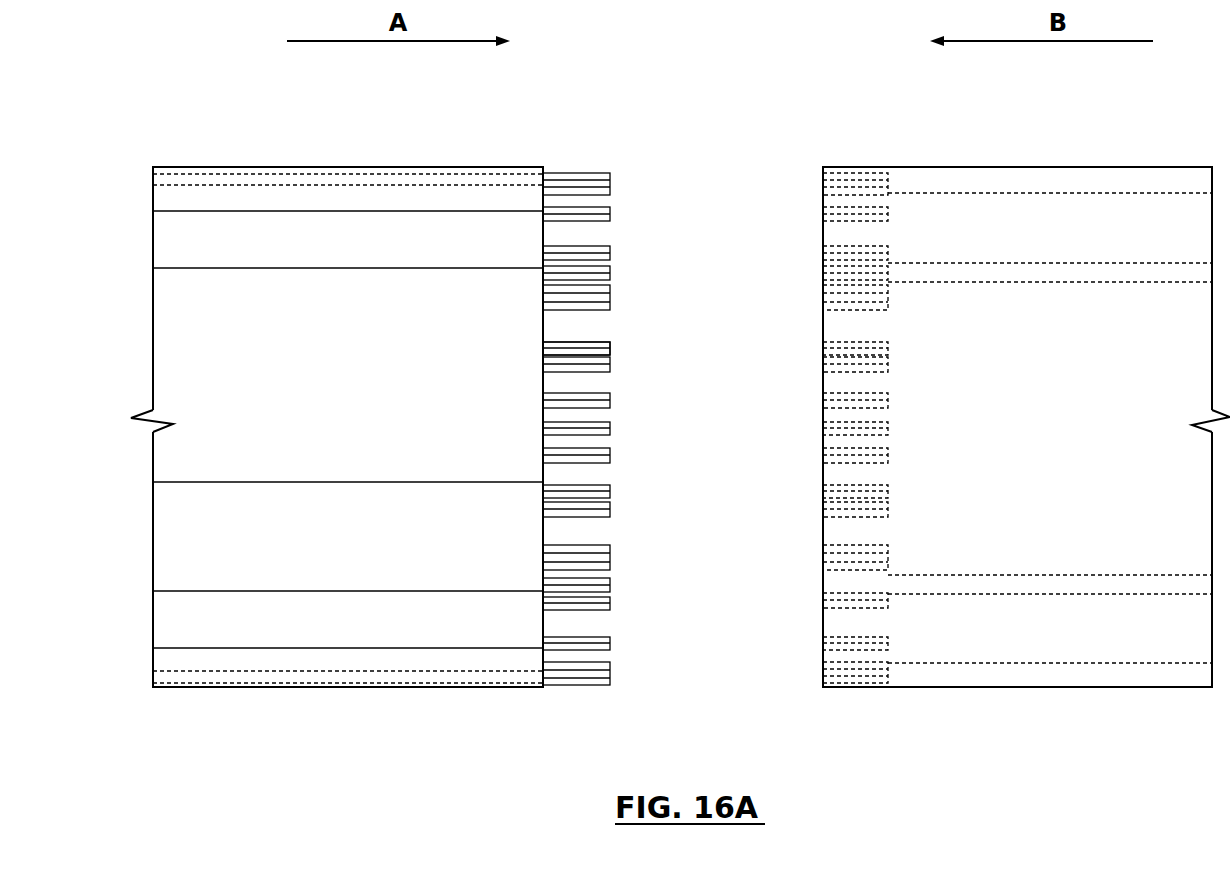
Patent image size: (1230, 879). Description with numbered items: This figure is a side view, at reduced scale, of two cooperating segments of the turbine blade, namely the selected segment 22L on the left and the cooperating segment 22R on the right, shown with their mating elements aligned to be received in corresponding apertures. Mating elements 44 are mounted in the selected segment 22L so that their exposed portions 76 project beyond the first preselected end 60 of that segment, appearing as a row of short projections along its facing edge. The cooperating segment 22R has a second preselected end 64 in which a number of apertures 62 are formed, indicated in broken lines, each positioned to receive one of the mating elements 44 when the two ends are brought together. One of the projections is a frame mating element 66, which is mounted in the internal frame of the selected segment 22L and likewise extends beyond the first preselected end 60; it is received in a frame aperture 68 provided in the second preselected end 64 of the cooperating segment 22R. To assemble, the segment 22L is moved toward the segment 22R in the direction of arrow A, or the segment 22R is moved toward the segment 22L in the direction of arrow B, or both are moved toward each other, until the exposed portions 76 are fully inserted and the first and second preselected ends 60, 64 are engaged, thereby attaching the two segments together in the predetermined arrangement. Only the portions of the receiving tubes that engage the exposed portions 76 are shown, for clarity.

The selected one of the segments 22L is at (360, 154).
The cooperating one of the segments 22R is at (1020, 154).
The mating element 44 is at (607, 183).
The exposed portions 76 is at (585, 218).
The frame mating element 66 is at (605, 350).
The first preselected end 60 is at (552, 626).
The frame aperture 68 is at (823, 345).
The aperture 62 is at (823, 643).
The second preselected end 64 is at (823, 660).